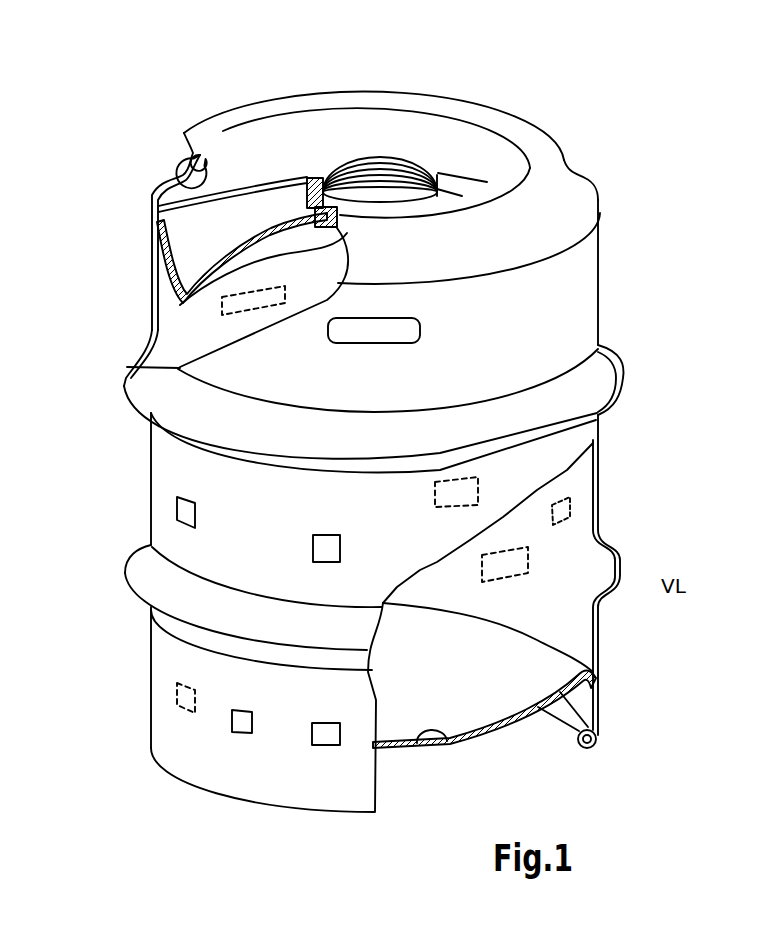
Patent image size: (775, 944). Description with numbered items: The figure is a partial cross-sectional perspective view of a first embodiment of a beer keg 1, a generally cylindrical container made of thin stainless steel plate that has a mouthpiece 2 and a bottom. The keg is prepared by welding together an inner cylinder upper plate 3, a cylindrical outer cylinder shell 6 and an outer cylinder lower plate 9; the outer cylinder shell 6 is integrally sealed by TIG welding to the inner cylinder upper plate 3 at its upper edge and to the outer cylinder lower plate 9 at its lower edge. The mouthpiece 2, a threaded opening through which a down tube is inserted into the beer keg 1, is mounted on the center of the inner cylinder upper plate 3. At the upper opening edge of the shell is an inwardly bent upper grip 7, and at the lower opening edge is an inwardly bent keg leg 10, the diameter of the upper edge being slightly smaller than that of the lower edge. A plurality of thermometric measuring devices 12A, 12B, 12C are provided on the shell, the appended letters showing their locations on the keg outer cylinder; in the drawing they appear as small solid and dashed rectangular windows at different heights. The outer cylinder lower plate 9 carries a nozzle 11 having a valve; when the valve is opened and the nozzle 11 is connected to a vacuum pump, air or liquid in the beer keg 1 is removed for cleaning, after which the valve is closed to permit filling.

The beer keg 1 is at (152, 332).
The mouthpiece 2 is at (333, 165).
The inner cylinder upper plate 3 is at (243, 243).
The outer cylinder shell 6 is at (128, 358).
The upper grip 7 is at (540, 125).
The outer cylinder lower plate 9 is at (485, 730).
The keg leg 10 is at (597, 743).
The nozzle 11 is at (434, 750).
The thermometric measuring device 12A is at (528, 560).
The thermometric measuring device 12B is at (177, 510).
The thermometric measuring device 12C is at (425, 330).